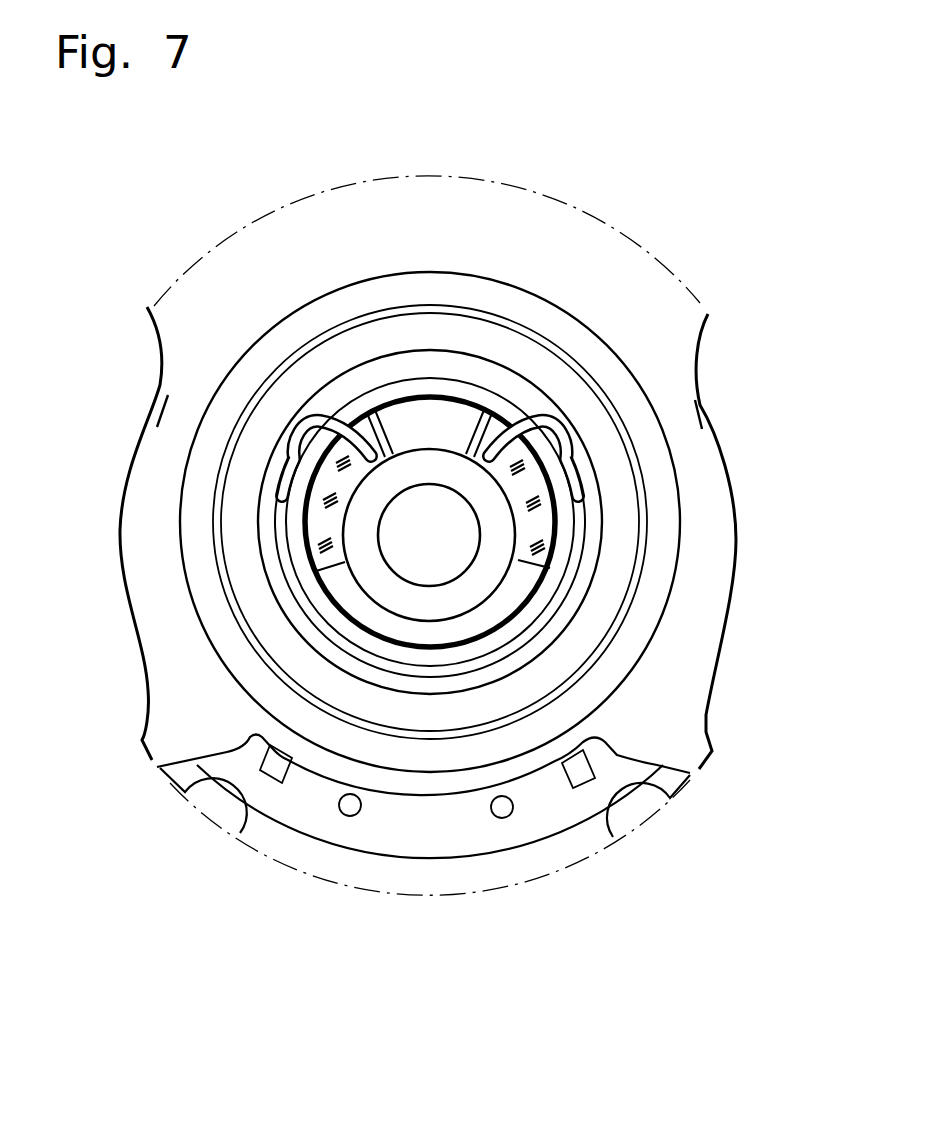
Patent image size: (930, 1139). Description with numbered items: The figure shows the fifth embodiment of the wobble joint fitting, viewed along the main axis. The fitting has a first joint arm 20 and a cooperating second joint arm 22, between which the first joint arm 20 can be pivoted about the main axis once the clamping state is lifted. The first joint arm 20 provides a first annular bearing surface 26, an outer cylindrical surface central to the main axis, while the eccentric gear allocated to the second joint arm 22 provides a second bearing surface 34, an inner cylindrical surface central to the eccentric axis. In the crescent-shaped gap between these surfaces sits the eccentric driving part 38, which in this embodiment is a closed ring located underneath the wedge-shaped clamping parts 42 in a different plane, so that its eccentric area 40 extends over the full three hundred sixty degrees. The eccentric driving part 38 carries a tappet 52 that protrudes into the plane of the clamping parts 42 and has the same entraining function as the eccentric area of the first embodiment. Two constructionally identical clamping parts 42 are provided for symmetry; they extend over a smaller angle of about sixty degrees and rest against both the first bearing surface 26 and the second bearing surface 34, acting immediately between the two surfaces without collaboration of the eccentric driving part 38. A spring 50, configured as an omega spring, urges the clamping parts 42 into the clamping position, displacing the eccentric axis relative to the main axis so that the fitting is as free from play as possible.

The first joint arm 20 is at (503, 835).
The second joint arm 22 is at (600, 268).
The first bearing surface 26 is at (430, 623).
The second bearing surface 34 is at (344, 594).
The eccentric driving part 38 is at (525, 582).
The eccentric area 40 is at (367, 423).
The clamping part 42 is at (318, 518).
The spring 50 is at (528, 654).
The tappet 52 is at (437, 418).